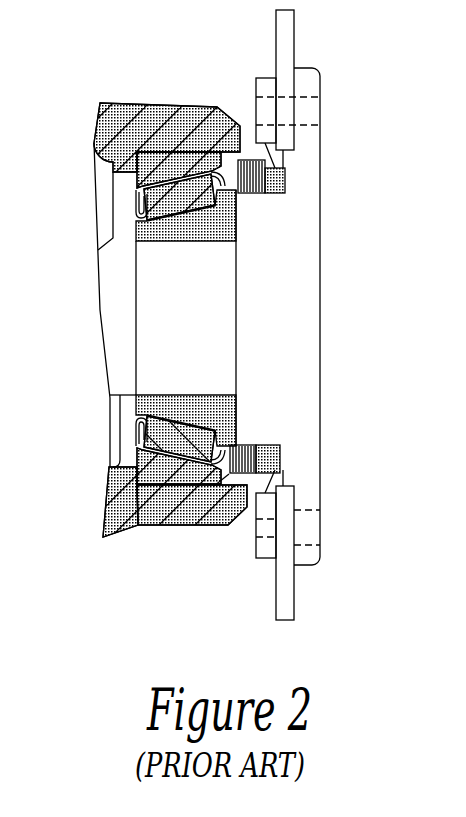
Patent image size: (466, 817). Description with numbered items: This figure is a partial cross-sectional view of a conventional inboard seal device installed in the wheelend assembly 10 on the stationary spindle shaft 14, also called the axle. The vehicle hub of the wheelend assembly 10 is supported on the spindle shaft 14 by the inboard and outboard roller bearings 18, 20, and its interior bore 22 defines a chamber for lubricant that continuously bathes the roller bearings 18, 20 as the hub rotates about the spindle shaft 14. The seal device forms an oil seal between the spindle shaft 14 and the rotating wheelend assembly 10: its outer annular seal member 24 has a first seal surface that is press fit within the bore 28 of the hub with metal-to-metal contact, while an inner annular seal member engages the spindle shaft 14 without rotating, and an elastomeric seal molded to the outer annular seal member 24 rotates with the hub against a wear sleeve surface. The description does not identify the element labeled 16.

The wheelend assembly 10 is at (240, 104).
The spindle shaft 14 is at (98, 117).
The bearing cage 16 is at (140, 186).
The inboard roller bearing 18 is at (138, 524).
The outboard roller bearing 20 is at (197, 207).
The interior bore 22 is at (157, 150).
The outer annular seal member 24 is at (233, 524).
The bore 28 is at (240, 440).